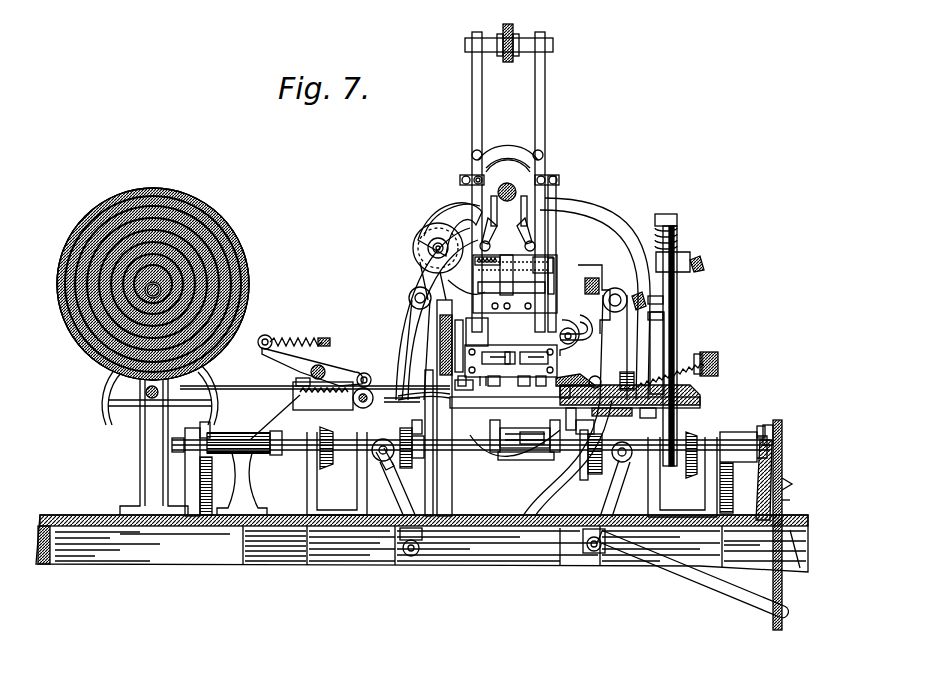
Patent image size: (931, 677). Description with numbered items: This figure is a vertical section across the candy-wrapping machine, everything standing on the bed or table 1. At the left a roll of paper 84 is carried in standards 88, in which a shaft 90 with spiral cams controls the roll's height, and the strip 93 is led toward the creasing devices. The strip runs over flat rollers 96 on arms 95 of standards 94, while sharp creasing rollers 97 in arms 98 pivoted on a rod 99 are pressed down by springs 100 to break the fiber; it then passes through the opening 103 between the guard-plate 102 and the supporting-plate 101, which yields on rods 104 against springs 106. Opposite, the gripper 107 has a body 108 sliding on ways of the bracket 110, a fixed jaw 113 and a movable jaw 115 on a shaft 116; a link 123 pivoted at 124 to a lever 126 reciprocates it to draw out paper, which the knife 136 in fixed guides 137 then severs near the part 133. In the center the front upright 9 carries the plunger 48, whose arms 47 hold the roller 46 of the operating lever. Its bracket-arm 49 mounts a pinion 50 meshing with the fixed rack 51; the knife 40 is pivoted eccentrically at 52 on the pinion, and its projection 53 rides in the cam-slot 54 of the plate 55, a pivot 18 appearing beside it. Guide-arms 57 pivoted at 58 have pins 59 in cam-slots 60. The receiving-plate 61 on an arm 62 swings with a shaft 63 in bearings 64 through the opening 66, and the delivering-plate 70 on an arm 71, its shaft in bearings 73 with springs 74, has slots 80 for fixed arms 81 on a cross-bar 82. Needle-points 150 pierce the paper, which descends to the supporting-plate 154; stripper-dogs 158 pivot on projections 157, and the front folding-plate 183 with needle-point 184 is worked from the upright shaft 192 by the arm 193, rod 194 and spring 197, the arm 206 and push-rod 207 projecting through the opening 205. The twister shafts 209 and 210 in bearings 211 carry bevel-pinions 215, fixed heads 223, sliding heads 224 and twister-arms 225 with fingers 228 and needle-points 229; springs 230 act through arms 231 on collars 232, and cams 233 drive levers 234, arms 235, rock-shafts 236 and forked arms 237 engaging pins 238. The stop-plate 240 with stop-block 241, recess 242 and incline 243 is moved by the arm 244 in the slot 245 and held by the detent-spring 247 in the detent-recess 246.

The bed or table 1 is at (500, 530).
The upright 9 is at (552, 198).
The pivot 18 is at (600, 288).
The knife or cutter 40 is at (420, 275).
The roller 46 is at (514, 37).
The arms 47 is at (534, 103).
The vertically-moving plunger 48 is at (460, 192).
The bracket-arm 49 is at (452, 215).
The pinion 50 is at (414, 241).
The fixed rack 51 is at (409, 300).
The eccentric pivot 52 is at (428, 250).
The projection 53 is at (570, 328).
The cam-slot 54 is at (578, 344).
The plate 55 is at (590, 265).
The guide-arm 57 is at (566, 246).
The pivot 58 is at (537, 238).
The pin 59 is at (526, 204).
The cam-slot 60 is at (507, 170).
The receiving-plate 61 is at (527, 275).
The arm 62 is at (487, 271).
The shaft 63 is at (515, 277).
The bearings 64 is at (556, 287).
The opening 66 is at (461, 283).
The delivering-plate 70 is at (503, 362).
The arm 71 is at (504, 354).
The bearings 73 is at (466, 330).
The springs 74 is at (533, 376).
The slots 80 is at (498, 384).
The fixed arms 81 is at (489, 370).
The cross-bar 82 is at (455, 384).
The roll of paper 84 is at (212, 223).
The standards 88 is at (140, 450).
The shaft 90 is at (152, 398).
The shaft 93 is at (225, 387).
The standards 94 is at (278, 408).
The arms 95 is at (328, 412).
The flat rollers 96 is at (364, 408).
The rollers 97 is at (368, 374).
The arms 98 is at (340, 367).
The rod 99 is at (300, 380).
The spring 100 is at (300, 333).
The supporting-plate 101 is at (436, 395).
The guard-plate 102 is at (444, 372).
The slot or opening 103 is at (410, 394).
The rods 104 is at (401, 407).
The springs 106 is at (332, 373).
The reciprocating gripper 107 is at (650, 370).
The slide or body 108 is at (696, 390).
The bracket 110 is at (536, 450).
The fixed jaw 113 is at (568, 419).
The movable jaw 115 is at (598, 377).
The shaft 116 is at (622, 375).
The link 123 is at (682, 372).
The pivot 124 is at (706, 356).
The lever 126 is at (720, 362).
The block 133 is at (548, 388).
The knife 136 is at (439, 346).
The fixed guides 137 is at (434, 343).
The needle-points 150 is at (576, 374).
The supporting-plate 154 is at (526, 453).
The projections 157 is at (523, 433).
The stripper-dogs 158 is at (470, 450).
The front folding-plate 183 is at (525, 436).
The needle-point 184 is at (532, 442).
The upright shaft 192 is at (663, 232).
The arm 193 is at (684, 262).
The rod 194 is at (704, 264).
The spring 197 is at (678, 226).
The slot or opening 205 is at (664, 316).
The arm 206 is at (664, 298).
The push-rod 207 is at (640, 294).
The shaft 209 is at (300, 453).
The shaft 210 is at (756, 433).
The bearings 211 is at (358, 488).
The bevel-pinion 215 is at (322, 462).
The fixed head 223 is at (576, 429).
The sliding head 224 is at (408, 470).
The twister-arms 225 is at (410, 426).
The twisting-finger 228 is at (580, 464).
The needle-point 229 is at (524, 445).
The spring 230 is at (175, 543).
The arm 231 is at (212, 433).
The collar 232 is at (199, 463).
The cams 233 is at (520, 139).
The lever 234 is at (398, 340).
The arm 235 is at (550, 546).
The rock-shaft 236 is at (400, 545).
The arm 237 is at (396, 498).
The pins 238 is at (383, 458).
The stop-plate 240 is at (744, 547).
The stop-block 241 is at (753, 480).
The recess 242 is at (712, 485).
The incline 243 is at (782, 467).
The arm 244 is at (690, 560).
The slot 245 is at (782, 596).
The detent-recess 246 is at (801, 504).
The detent-spring 247 is at (802, 481).